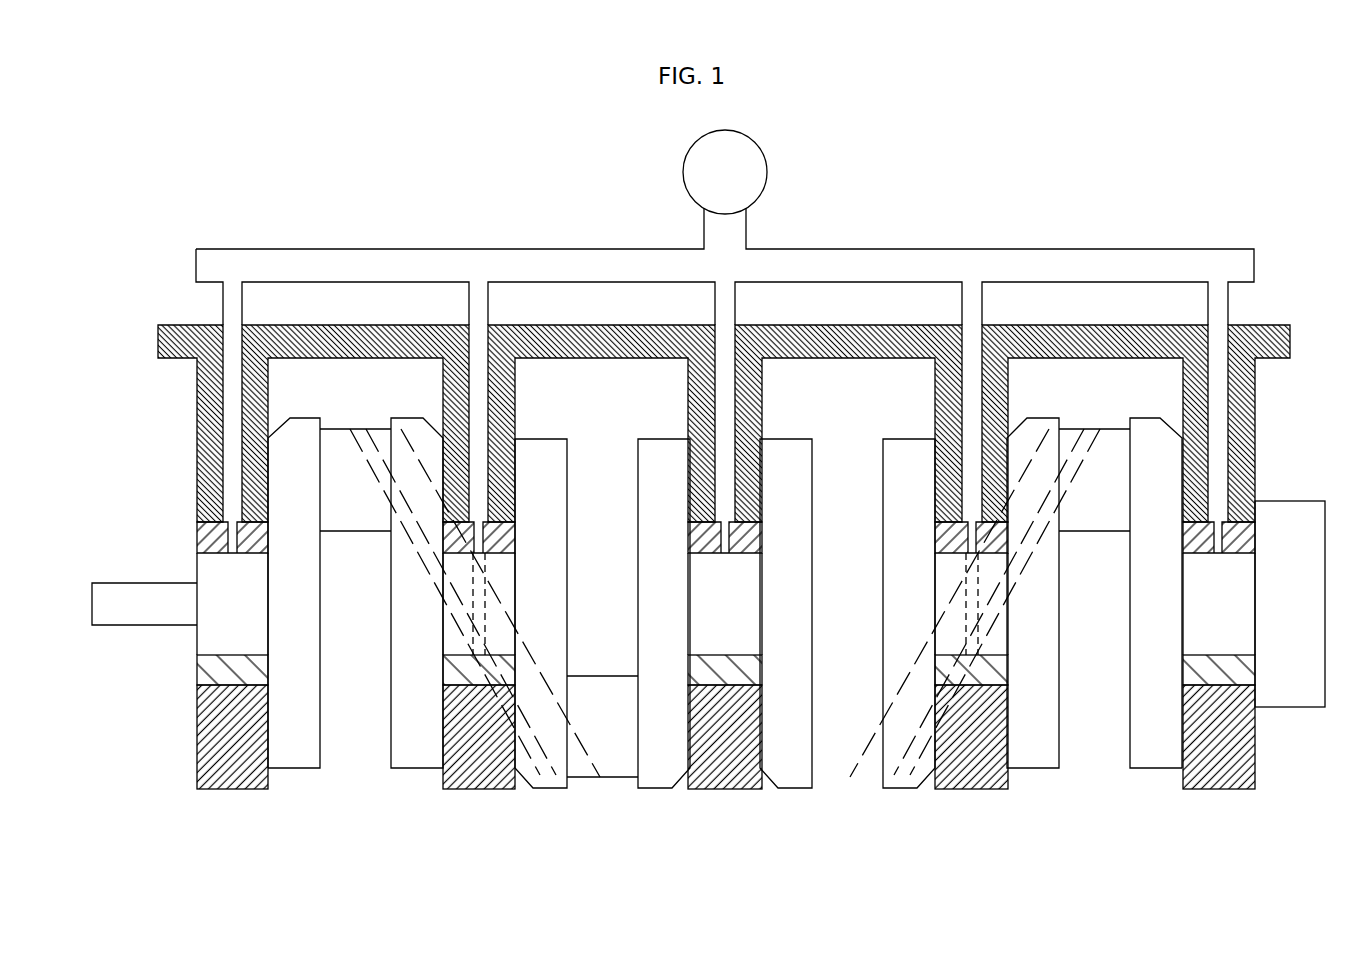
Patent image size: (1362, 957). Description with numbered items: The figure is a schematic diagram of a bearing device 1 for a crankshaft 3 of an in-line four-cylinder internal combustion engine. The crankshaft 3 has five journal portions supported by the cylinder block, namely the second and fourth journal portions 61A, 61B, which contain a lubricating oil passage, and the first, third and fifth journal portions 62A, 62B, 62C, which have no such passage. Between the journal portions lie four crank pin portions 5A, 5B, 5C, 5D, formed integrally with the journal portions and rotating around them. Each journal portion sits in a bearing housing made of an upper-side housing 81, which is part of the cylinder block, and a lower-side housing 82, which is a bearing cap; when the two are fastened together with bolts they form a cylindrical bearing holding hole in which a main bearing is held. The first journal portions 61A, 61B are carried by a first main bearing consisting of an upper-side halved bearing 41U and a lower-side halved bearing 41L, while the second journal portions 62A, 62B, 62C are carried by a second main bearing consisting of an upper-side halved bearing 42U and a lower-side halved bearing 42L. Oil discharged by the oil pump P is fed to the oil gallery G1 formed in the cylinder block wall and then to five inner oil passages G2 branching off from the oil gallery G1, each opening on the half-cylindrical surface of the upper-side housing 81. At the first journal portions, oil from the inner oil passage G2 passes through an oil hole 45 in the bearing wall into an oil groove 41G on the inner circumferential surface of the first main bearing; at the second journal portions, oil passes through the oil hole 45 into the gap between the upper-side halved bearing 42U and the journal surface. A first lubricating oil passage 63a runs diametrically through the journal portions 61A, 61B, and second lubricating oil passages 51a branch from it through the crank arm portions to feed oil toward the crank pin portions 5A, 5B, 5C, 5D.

The bearing device 1 is at (1170, 222).
The crankshaft 3 is at (122, 574).
The oil pump P is at (725, 172).
The oil gallery G1 is at (1058, 252).
The inner oil passage G2 is at (229, 300).
The upper-side housing 81 is at (268, 374).
The lower-side housing 82 is at (233, 780).
The oil hole 45 is at (268, 540).
The upper-side halved bearing 42U is at (268, 556).
The lower-side halved bearing 42L is at (252, 664).
The upper-side halved bearing 41U is at (515, 547).
The lower-side halved bearing 41L is at (495, 664).
The oil groove 41G is at (470, 558).
The crank pin portion 5A is at (379, 432).
The crank pin portion 5B is at (582, 788).
The crank pin portion 5C is at (832, 788).
The crank pin portion 5D is at (1114, 432).
The second lubricating oil passage 51a is at (550, 700).
The journal portion 61A is at (450, 655).
The journal portion 61B is at (928, 780).
The journal portion 62A is at (216, 638).
The journal portion 62B is at (684, 778).
The journal portion 62C is at (1192, 635).
The first lubricating oil passage 63a is at (472, 620).